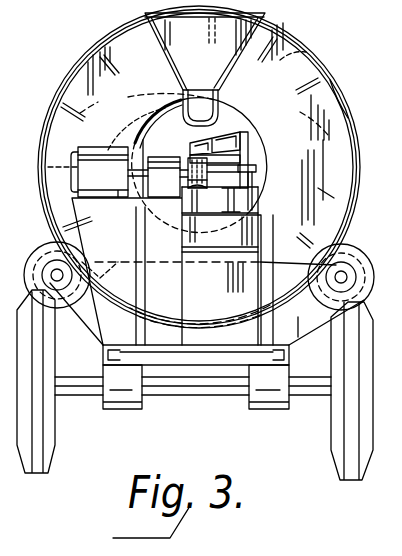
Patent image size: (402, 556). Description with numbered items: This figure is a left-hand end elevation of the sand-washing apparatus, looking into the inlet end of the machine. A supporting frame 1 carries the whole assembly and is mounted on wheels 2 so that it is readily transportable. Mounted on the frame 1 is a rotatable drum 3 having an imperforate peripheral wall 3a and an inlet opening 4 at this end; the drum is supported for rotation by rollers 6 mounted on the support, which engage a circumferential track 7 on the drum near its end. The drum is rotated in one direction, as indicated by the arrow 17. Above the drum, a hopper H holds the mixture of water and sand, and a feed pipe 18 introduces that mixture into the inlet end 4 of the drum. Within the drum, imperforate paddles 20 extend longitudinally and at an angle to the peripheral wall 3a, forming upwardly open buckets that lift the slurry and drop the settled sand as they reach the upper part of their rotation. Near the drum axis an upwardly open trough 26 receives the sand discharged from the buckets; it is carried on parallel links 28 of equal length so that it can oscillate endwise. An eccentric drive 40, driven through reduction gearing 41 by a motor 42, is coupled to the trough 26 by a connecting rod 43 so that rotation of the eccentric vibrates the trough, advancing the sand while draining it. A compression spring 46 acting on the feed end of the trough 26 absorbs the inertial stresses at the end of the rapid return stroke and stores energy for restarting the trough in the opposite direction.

The supporting frame 1 is at (197, 362).
The wheels 2 is at (35, 475).
The rotatable drum 3 is at (336, 80).
The imperforate peripheral wall 3a is at (310, 52).
The inlet opening 4 is at (228, 117).
The rollers 6 is at (40, 243).
The circumferential tracks 7 is at (348, 118).
The arrow 17 is at (80, 50).
The feed pipe 18 is at (112, 135).
The imperforate paddles 20 is at (307, 165).
The trough 26 is at (170, 135).
The links 28 is at (255, 190).
The eccentric drive 40 is at (193, 190).
The reduction gearing 41 is at (165, 168).
The motor 42 is at (98, 172).
The connecting rod 43 is at (213, 162).
The compression spring 46 is at (197, 190).
The hopper H is at (268, 32).